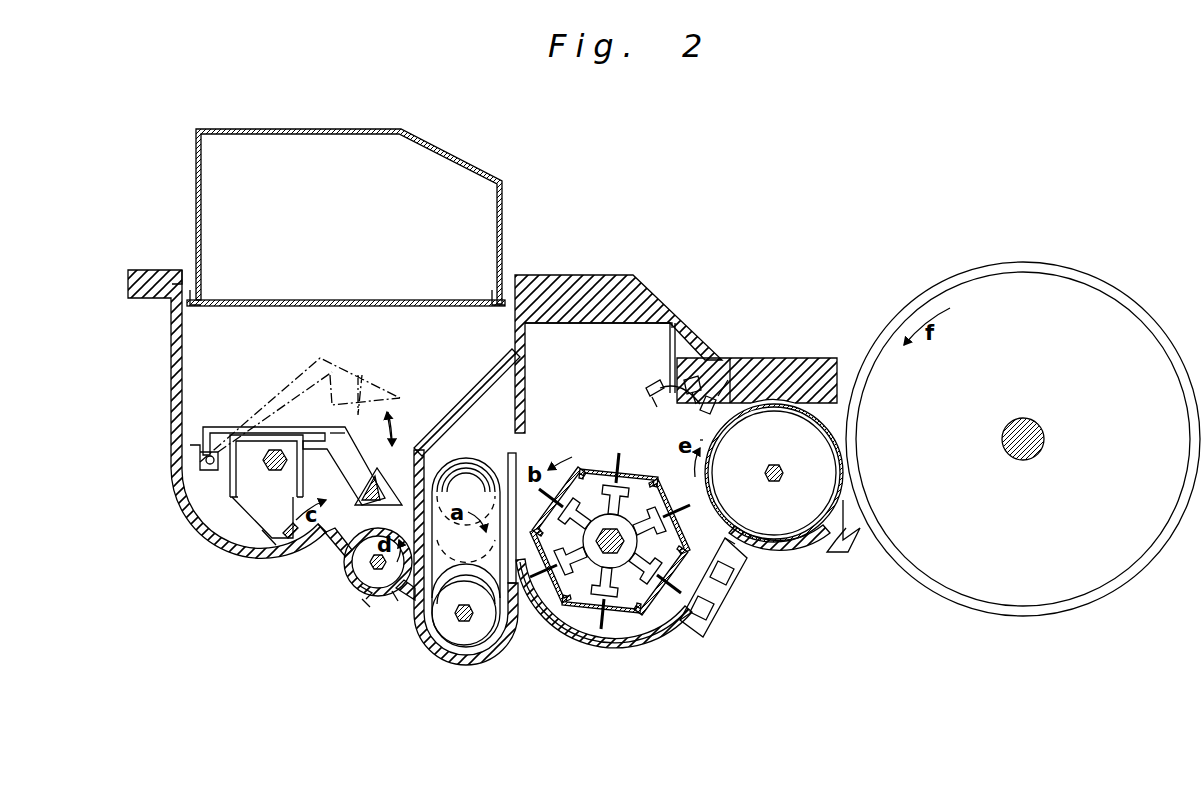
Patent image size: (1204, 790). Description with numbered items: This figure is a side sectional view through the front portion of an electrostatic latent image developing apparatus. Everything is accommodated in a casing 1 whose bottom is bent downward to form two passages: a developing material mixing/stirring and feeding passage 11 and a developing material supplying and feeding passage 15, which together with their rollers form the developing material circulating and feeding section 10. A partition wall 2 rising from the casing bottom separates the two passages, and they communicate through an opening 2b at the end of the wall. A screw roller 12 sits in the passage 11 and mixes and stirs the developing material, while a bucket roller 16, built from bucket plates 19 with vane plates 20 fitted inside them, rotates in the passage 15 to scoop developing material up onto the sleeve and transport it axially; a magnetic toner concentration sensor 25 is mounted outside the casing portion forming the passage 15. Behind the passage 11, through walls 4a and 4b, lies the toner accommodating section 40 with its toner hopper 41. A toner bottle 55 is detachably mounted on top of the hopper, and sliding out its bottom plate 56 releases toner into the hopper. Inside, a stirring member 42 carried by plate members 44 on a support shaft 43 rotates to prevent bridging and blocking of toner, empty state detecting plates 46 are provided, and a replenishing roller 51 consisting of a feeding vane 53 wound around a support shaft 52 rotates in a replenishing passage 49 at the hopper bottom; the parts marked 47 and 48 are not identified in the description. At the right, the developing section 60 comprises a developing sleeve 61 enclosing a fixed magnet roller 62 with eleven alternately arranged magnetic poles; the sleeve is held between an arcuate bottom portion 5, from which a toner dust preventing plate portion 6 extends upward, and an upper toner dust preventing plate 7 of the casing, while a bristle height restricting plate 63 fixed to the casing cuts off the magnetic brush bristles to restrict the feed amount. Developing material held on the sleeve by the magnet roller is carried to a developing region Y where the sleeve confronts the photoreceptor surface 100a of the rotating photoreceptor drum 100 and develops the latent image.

The casing 1 is at (587, 268).
The partition wall 2 is at (516, 460).
The opening 2b is at (517, 582).
The wall 4a is at (413, 460).
The wall 4b is at (472, 385).
The arcuate bottom portion 5 is at (777, 552).
The toner dust preventing plate portion 6 is at (840, 507).
The upper toner dust preventing plate 7 is at (805, 360).
The developing material circulating and feeding section 10 is at (609, 394).
The developing material mixing/stirring and feeding passage 11 is at (463, 650).
The screw roller 12 is at (450, 622).
The developing material supplying and feeding passage 15 is at (594, 628).
The bucket roller 16 is at (630, 636).
The bucket plates 19 is at (618, 455).
The vane plates 20 is at (562, 598).
The toner concentration sensor 25 is at (716, 597).
The toner accommodating section 40 is at (406, 343).
The toner hopper 41 is at (210, 385).
The stirring member 42 is at (286, 533).
The support shaft 43 is at (238, 534).
The plate members 44 is at (268, 475).
The empty state detecting plates 46 is at (318, 432).
The pivot pin 47 is at (206, 460).
The stopper 48 is at (330, 440).
The replenishing passage 49 is at (368, 608).
The replenishing roller 51 is at (373, 590).
The support shaft 52 is at (397, 600).
The feeding vane 53 is at (360, 577).
The toner bottle 55 is at (340, 128).
The bottom plate 56 is at (305, 300).
The developing section 60 is at (802, 473).
The developing sleeve 61 is at (840, 413).
The magnet roller 62 is at (803, 552).
The bristle height restricting plate 63 is at (700, 392).
The photoreceptor drum 100 is at (1073, 268).
The photoreceptor surface 100a is at (945, 278).
The developing region Y is at (840, 443).